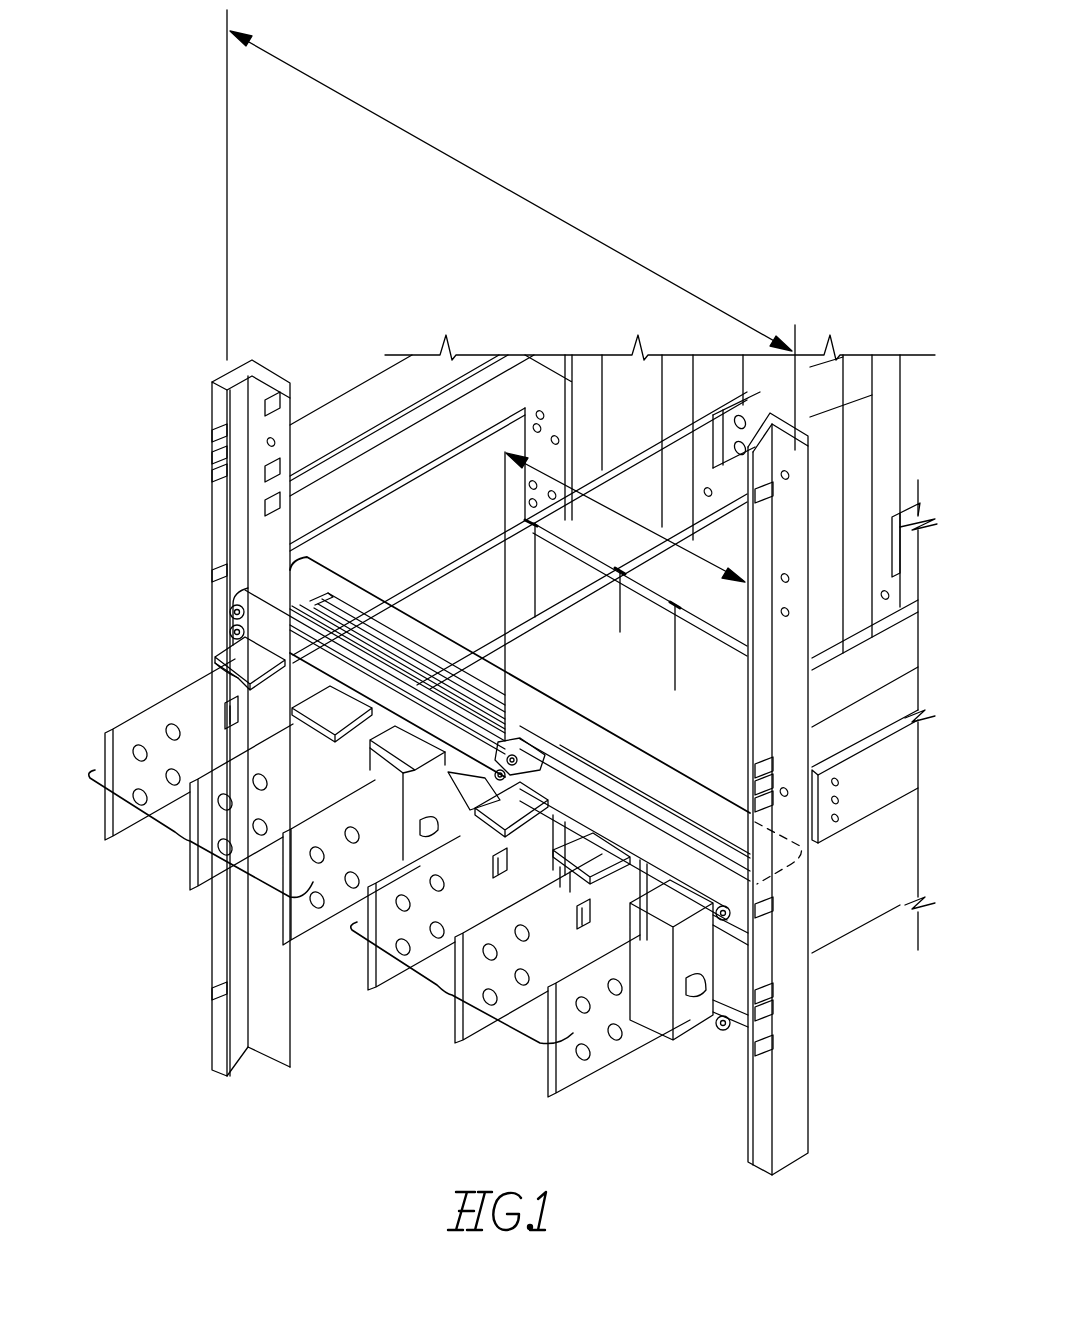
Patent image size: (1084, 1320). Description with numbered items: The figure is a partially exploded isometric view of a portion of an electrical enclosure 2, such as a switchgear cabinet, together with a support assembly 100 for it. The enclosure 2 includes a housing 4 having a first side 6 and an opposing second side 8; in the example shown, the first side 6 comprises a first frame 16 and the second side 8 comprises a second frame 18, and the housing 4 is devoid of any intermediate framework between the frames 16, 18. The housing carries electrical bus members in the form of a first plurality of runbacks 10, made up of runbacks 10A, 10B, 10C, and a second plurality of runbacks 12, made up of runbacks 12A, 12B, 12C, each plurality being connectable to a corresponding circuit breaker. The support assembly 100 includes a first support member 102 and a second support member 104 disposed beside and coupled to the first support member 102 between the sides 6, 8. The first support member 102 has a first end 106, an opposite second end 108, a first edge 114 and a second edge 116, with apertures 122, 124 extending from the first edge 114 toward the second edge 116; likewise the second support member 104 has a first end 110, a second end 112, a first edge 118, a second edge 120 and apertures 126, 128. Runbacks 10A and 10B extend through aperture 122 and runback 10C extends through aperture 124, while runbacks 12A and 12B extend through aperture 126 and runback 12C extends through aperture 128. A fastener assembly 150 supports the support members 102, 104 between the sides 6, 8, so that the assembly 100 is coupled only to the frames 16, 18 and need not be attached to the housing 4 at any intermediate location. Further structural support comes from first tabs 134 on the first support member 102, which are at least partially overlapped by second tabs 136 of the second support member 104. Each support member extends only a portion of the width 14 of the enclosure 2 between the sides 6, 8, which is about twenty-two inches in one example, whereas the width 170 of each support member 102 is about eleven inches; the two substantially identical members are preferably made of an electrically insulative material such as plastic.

The electrical enclosure 2 is at (804, 1216).
The housing 4 is at (205, 398).
The first side 6 is at (746, 1172).
The second side 8 is at (197, 562).
The first plurality of runbacks 10 is at (518, 986).
The runback 10A is at (570, 1078).
The runback 10B is at (470, 1030).
The runback 10C is at (390, 982).
The second plurality of runbacks 12 is at (254, 794).
The runback 12A is at (347, 817).
The runback 12B is at (283, 752).
The runback 12C is at (200, 682).
The width 14 is at (522, 190).
The first frame 16 is at (797, 1010).
The second frame 18 is at (210, 498).
The support assembly 100 is at (490, 705).
The first support member 102 is at (657, 793).
The second support member 104 is at (335, 610).
The first end 106 is at (741, 1037).
The second end 108 is at (437, 756).
The first end 110 is at (547, 733).
The second end 112 is at (242, 578).
The first edge 114 is at (707, 812).
The second edge 116 is at (591, 862).
The first edge 118 is at (405, 640).
The second edge 120 is at (332, 714).
The aperture 122 is at (628, 893).
The aperture 124 is at (542, 838).
The aperture 126 is at (356, 738).
The aperture 128 is at (210, 640).
The first tabs 134 is at (511, 809).
The second tabs 136 is at (523, 742).
The fastener assembly 150 is at (470, 800).
The width 170 is at (624, 532).